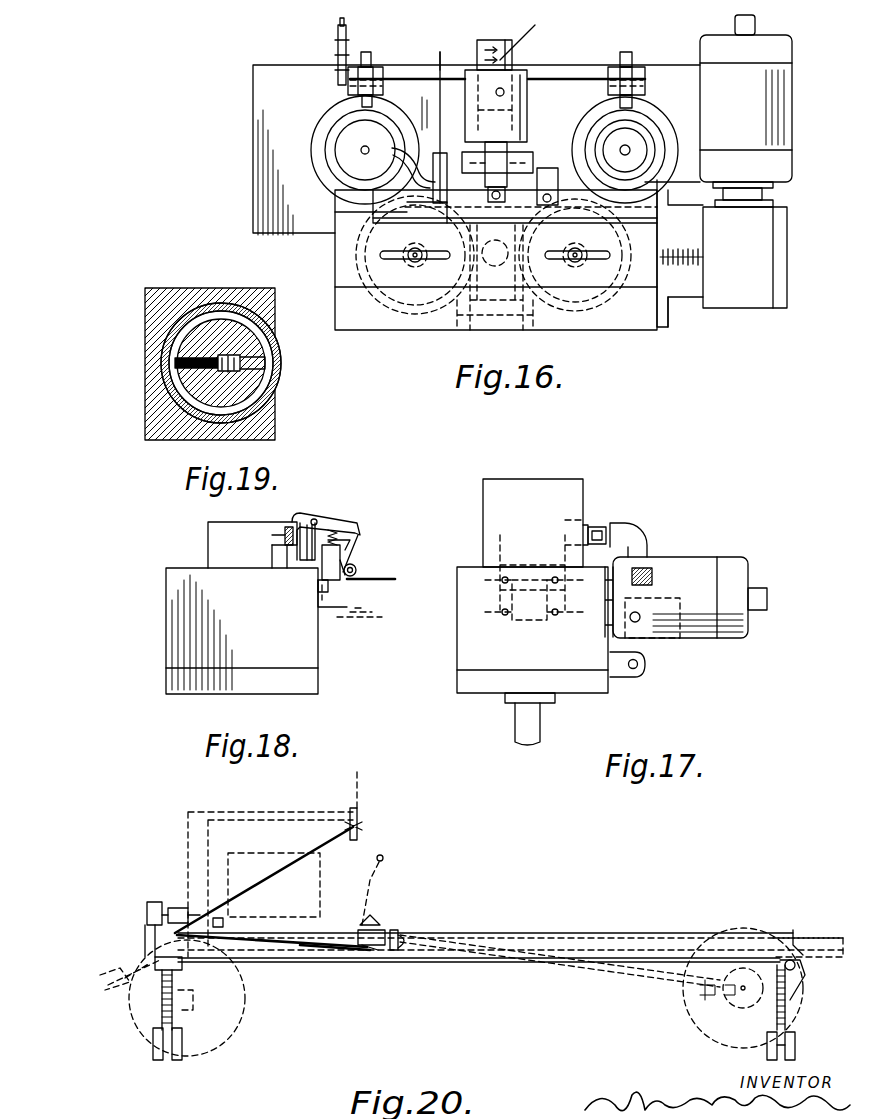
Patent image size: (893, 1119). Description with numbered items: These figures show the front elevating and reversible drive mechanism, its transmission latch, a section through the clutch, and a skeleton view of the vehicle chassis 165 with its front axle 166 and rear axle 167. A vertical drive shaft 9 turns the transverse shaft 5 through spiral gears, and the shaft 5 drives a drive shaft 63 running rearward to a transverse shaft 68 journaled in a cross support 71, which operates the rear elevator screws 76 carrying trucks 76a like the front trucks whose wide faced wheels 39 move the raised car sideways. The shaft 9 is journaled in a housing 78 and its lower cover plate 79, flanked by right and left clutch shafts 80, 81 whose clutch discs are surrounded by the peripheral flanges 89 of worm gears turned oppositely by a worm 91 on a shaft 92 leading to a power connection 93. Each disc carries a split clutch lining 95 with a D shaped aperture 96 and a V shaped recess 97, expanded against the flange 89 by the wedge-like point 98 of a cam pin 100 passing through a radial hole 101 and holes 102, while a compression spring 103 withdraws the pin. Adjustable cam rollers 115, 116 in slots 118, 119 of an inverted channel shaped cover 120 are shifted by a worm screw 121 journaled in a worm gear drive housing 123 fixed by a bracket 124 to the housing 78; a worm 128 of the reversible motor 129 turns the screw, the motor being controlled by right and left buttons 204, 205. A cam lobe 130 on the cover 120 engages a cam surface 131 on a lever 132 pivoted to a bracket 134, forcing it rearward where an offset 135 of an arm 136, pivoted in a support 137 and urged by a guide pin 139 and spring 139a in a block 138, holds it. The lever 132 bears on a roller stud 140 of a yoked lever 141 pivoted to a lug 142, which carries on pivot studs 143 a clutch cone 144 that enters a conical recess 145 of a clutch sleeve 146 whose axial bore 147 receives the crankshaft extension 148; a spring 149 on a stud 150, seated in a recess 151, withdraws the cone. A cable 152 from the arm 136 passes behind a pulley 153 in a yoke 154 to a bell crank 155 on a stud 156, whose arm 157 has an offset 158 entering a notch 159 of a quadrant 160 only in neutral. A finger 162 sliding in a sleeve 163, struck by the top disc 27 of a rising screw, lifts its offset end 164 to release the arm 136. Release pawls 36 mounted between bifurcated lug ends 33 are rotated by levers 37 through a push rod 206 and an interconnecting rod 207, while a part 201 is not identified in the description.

In FIG. 20, the transverse shaft 5 is at (155, 965).
In FIG. 16, the vertical drive shaft 9 is at (473, 280).
In FIG. 16, the retainer disc 27 is at (330, 160).
In FIG. 18, the retainer disc 27 is at (365, 618).
In FIG. 16, the bifurcated ends 33 is at (350, 80).
In FIG. 16, the release pawls 36 is at (372, 58).
In FIG. 16, the lever 37 is at (345, 68).
In FIG. 20, the lever 37 is at (160, 958).
In FIG. 20, the wide faced wheels 39 is at (180, 1037).
In FIG. 20, the drive shaft 63 is at (668, 960).
In FIG. 20, the transverse shaft 68 is at (800, 975).
In FIG. 20, the cross support 71 is at (798, 966).
In FIG. 20, the elevator screws 76 is at (790, 1012).
In FIG. 20, the trucks or carriages 76a is at (797, 1050).
In FIG. 16, the housing 78 is at (496, 260).
In FIG. 19, the housing 78 is at (270, 430).
In FIG. 18, the housing 78 is at (300, 640).
In FIG. 17, the housing 78 is at (460, 600).
In FIG. 20, the housing 78 is at (147, 915).
In FIG. 18, the lower cover plate 79 is at (320, 680).
In FIG. 17, the lower cover plate 79 is at (465, 685).
In FIG. 16, the right clutch shaft 80 is at (622, 282).
In FIG. 16, the left clutch shaft 81 is at (410, 262).
In FIG. 19, the left clutch shaft 81 is at (170, 395).
In FIG. 19, the peripheral flange 89 is at (213, 302).
In FIG. 16, the worm 91 is at (577, 262).
In FIG. 16, the worm shaft 92 is at (487, 130).
In FIG. 16, the power connection 93 is at (525, 160).
In FIG. 20, the power connection 93 is at (223, 923).
In FIG. 19, the clutch lining 95 is at (268, 322).
In FIG. 19, the D shaped central aperture 96 is at (168, 342).
In FIG. 19, the V shaped recess 97 is at (262, 362).
In FIG. 19, the wedge-like point 98 is at (270, 383).
In FIG. 19, the cam pin 100 is at (215, 415).
In FIG. 19, the radial hole 101 is at (228, 345).
In FIG. 19, the holes 102 is at (245, 305).
In FIG. 19, the compression spring 103 is at (268, 393).
In FIG. 16, the adjustable cam roller 115 is at (580, 262).
In FIG. 16, the adjustable cam roller 116 is at (413, 262).
In FIG. 16, the transverse elongated slot 118 is at (615, 253).
In FIG. 16, the transverse elongated slot 119 is at (380, 255).
In FIG. 16, the inverted channel shaped cover 120 is at (662, 300).
In FIG. 18, the inverted channel shaped cover 120 is at (209, 530).
In FIG. 16, the worm screw 121 is at (690, 262).
In FIG. 16, the worm gear drive housing 123 is at (757, 245).
In FIG. 20, the worm gear drive housing 123 is at (153, 902).
In FIG. 16, the bracket 124 is at (690, 312).
In FIG. 17, the worm 128 is at (520, 625).
In FIG. 16, the reversible motor 129 is at (790, 115).
In FIG. 17, the reversible motor 129 is at (700, 565).
In FIG. 20, the reversible motor 129 is at (178, 908).
In FIG. 16, the cam lobe 130 is at (373, 220).
In FIG. 17, the cam lobe 130 is at (500, 612).
In FIG. 16, the cam surface 131 is at (405, 207).
In FIG. 18, the cam surface 131 is at (278, 545).
In FIG. 16, the lever 132 is at (660, 182).
In FIG. 18, the lever 132 is at (287, 530).
In FIG. 17, the lever 132 is at (578, 500).
In FIG. 16, the bracket 134 is at (650, 140).
In FIG. 16, the offset 135 is at (428, 210).
In FIG. 18, the offset 135 is at (300, 516).
In FIG. 16, the arm 136 is at (437, 157).
In FIG. 18, the arm 136 is at (316, 530).
In FIG. 16, the support 137 is at (387, 167).
In FIG. 18, the support 137 is at (318, 540).
In FIG. 18, the block 138 is at (342, 572).
In FIG. 18, the guide pin 139 is at (340, 560).
In FIG. 18, the compression spring 139a is at (350, 528).
In FIG. 16, the spring tension roller stud 140 is at (628, 155).
In FIG. 17, the spring tension roller stud 140 is at (600, 530).
In FIG. 16, the yoked lever 141 is at (540, 157).
In FIG. 17, the yoked lever 141 is at (622, 538).
In FIG. 17, the lug 142 is at (645, 668).
In FIG. 16, the pivot studs 143 is at (625, 118).
In FIG. 17, the pivot studs 143 is at (660, 600).
In FIG. 16, the clutch cone 144 is at (545, 80).
In FIG. 17, the clutch cone 144 is at (683, 610).
In FIG. 16, the conical recess 145 is at (440, 70).
In FIG. 16, the clutch sleeve 146 is at (528, 85).
In FIG. 16, the axial bore 147 is at (528, 34).
In FIG. 16, the forward crankshaft extension 148 is at (500, 42).
In FIG. 17, the compression spring 149 is at (648, 570).
In FIG. 17, the stud 150 is at (652, 570).
In FIG. 17, the recess 151 is at (645, 562).
In FIG. 16, the cable 152 is at (441, 77).
In FIG. 18, the cable 152 is at (372, 578).
In FIG. 20, the cable 152 is at (310, 944).
In FIG. 18, the pulley 153 is at (362, 582).
In FIG. 18, the yoke 154 is at (355, 580).
In FIG. 20, the bell crank 155 is at (370, 937).
In FIG. 20, the stud 156 is at (375, 947).
In FIG. 20, the arm 157 is at (400, 928).
In FIG. 20, the offset 158 is at (365, 948).
In FIG. 20, the notch 159 is at (385, 930).
In FIG. 20, the quadrant 160 is at (372, 925).
In FIG. 18, the vertically sliding finger 162 is at (322, 605).
In FIG. 18, the sleeve 163 is at (320, 592).
In FIG. 18, the upper offset end 164 is at (282, 533).
In FIG. 20, the vehicle chassis 165 is at (600, 933).
In FIG. 20, the front axle 166 is at (192, 1000).
In FIG. 20, the rear axle 167 is at (738, 990).
In FIG. 20, the rod 201 is at (505, 933).
In FIG. 20, the right control button 204 is at (358, 813).
In FIG. 20, the left control button 205 is at (358, 822).
In FIG. 16, the push rod connection 206 is at (337, 47).
In FIG. 20, the push rod connection 206 is at (285, 875).
In FIG. 16, the rod 207 is at (346, 33).